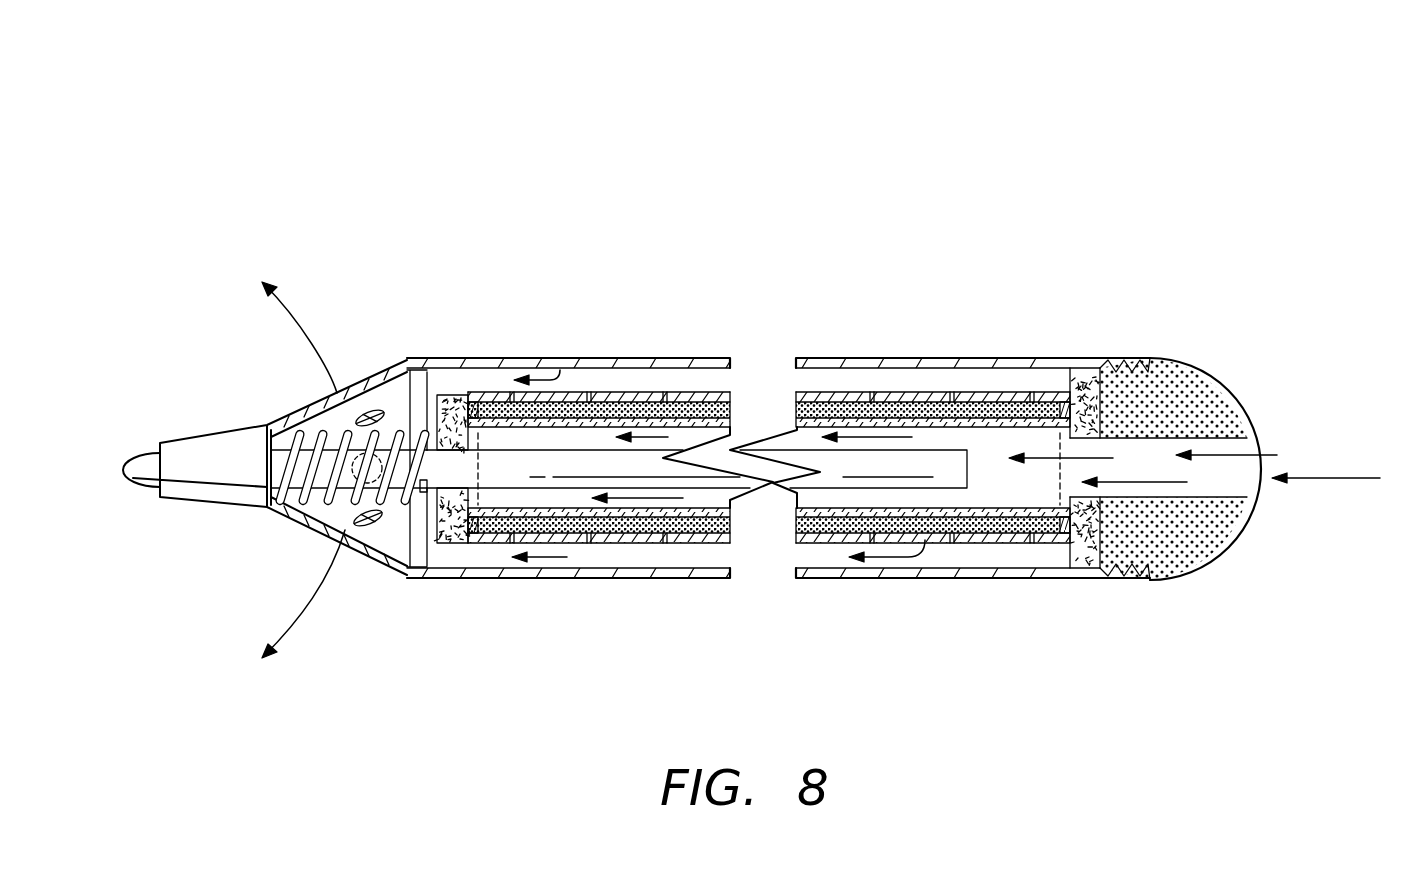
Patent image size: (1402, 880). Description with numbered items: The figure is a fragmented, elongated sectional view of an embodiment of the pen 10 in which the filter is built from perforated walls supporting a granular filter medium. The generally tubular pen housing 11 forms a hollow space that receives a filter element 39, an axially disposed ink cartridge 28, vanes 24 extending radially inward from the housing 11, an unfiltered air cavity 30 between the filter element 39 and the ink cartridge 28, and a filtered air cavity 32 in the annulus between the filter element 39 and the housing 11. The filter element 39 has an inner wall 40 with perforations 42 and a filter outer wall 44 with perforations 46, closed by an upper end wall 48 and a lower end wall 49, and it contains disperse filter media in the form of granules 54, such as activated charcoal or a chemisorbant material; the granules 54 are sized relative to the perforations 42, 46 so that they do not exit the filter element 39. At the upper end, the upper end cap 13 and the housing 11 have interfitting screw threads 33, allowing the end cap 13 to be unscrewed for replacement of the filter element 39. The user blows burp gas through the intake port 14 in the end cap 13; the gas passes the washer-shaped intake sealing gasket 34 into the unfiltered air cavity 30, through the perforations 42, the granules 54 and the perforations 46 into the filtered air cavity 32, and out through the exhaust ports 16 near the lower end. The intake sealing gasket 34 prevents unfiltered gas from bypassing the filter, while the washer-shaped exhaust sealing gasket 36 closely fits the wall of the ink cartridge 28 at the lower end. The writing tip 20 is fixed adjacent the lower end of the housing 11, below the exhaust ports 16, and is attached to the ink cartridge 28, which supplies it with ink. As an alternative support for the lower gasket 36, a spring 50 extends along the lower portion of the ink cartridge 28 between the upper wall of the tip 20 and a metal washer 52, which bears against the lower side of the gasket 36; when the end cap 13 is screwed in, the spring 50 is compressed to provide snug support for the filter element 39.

The pen 10 is at (720, 232).
The pen housing 11 is at (877, 366).
The upper end cap 13 is at (1210, 413).
The intake port 14 is at (1233, 485).
The exhaust ports 16 is at (385, 418).
The writing tip 20 is at (220, 452).
The vanes 24 is at (820, 380).
The ink cartridge 28 is at (507, 492).
The unfiltered air cavity 30 is at (648, 393).
The filtered air cavity 32 is at (330, 420).
The screw threads 33 is at (1133, 370).
The intake sealing gasket 34 is at (1076, 372).
The exhaust sealing gasket 36 is at (458, 396).
The filter element 39 is at (958, 395).
The inner wall 40 is at (565, 440).
The perforations 42 is at (748, 430).
The filter outer wall 44 is at (712, 542).
The perforations 46 is at (650, 514).
The upper end wall 48 is at (1080, 375).
The lower end wall 49 is at (488, 410).
The spring 50 is at (257, 472).
The metal washer 52 is at (450, 550).
The granules 54 is at (605, 595).